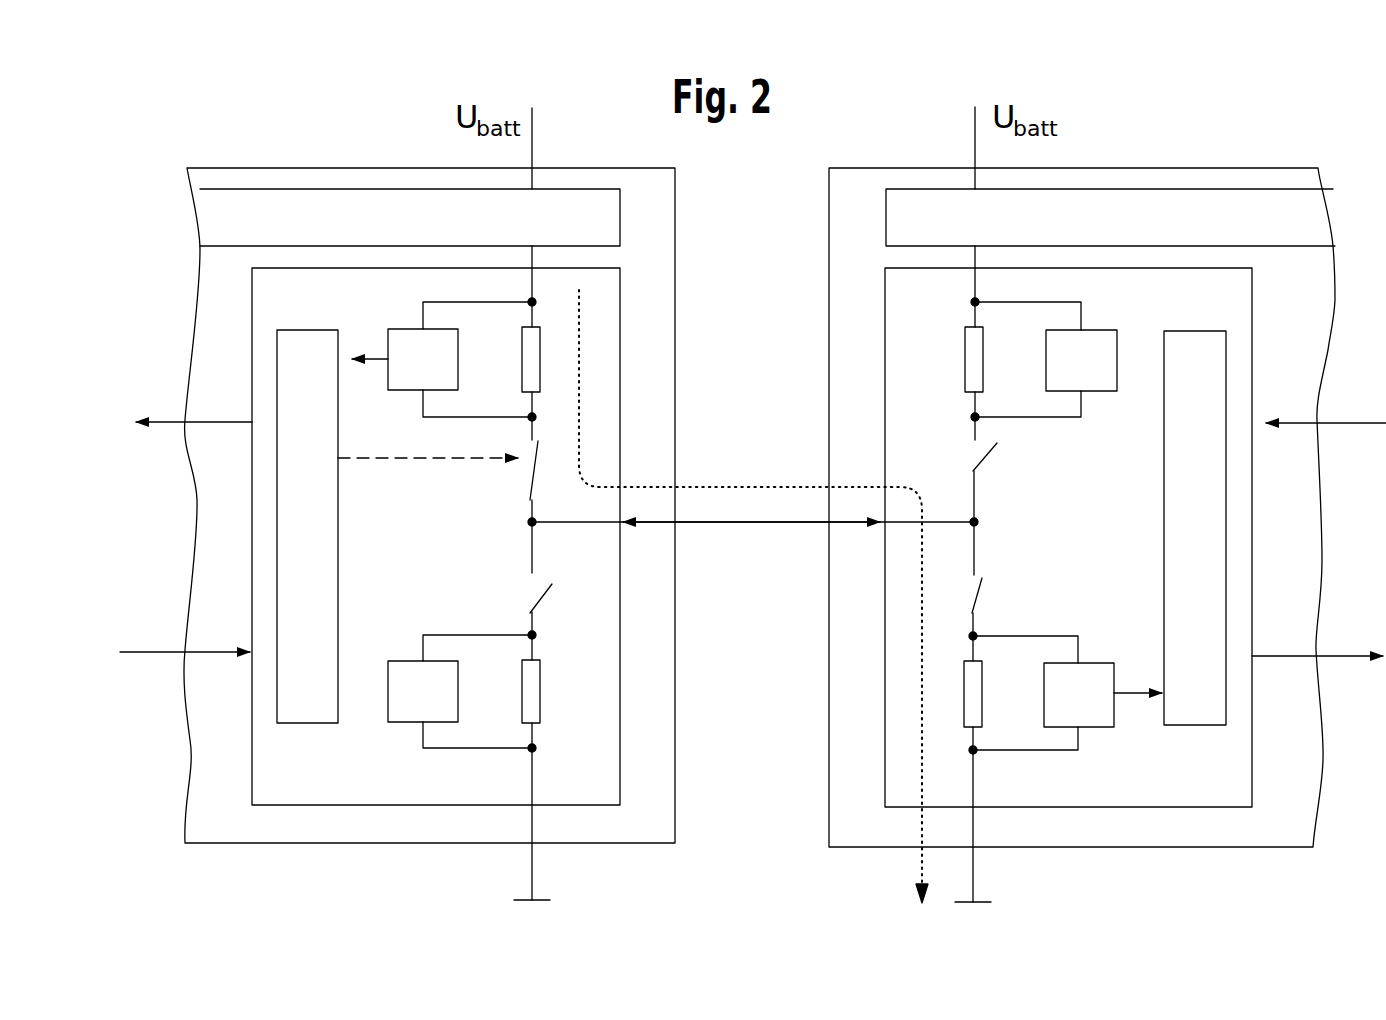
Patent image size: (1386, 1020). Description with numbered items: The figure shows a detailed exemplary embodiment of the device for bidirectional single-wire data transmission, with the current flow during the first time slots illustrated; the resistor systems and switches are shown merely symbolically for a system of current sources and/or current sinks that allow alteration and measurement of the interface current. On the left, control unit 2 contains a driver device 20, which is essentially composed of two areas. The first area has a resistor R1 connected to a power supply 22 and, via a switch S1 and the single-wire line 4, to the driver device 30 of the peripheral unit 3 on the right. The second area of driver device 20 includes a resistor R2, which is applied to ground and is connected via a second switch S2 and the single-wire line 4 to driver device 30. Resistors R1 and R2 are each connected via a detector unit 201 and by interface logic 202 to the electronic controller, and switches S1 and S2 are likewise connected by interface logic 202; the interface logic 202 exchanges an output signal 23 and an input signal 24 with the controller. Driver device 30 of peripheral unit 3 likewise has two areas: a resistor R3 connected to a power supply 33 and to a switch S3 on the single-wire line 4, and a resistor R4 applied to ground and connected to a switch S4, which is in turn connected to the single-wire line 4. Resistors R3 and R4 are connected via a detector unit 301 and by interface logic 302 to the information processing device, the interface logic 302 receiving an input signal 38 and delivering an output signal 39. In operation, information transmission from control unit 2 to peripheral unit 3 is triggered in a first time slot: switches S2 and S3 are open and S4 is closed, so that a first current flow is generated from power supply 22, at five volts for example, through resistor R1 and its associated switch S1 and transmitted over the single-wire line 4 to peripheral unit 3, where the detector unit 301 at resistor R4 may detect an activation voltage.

The control unit 2 is at (240, 168).
The peripheral unit 3 is at (918, 168).
The single-wire line 4 is at (752, 524).
The driver device 20 is at (436, 536).
The power supply 22 is at (410, 217).
The output signal 23 is at (165, 422).
The input signal 24 is at (140, 652).
The driver device 30 is at (1068, 537).
The power supply 33 is at (1110, 217).
The input signal 38 is at (1368, 423).
The output signal 39 is at (1339, 656).
The detector unit 201 is at (460, 525).
The interface logic 202 is at (397, 526).
The detector unit 301 is at (1045, 526).
The interface logic 302 is at (1170, 528).
The resistor R1 is at (528, 357).
The resistor R2 is at (528, 687).
The resistor R3 is at (975, 358).
The resistor R4 is at (974, 688).
The switch S1 is at (530, 470).
The switch S2 is at (538, 596).
The switch S3 is at (982, 460).
The switch S4 is at (980, 597).